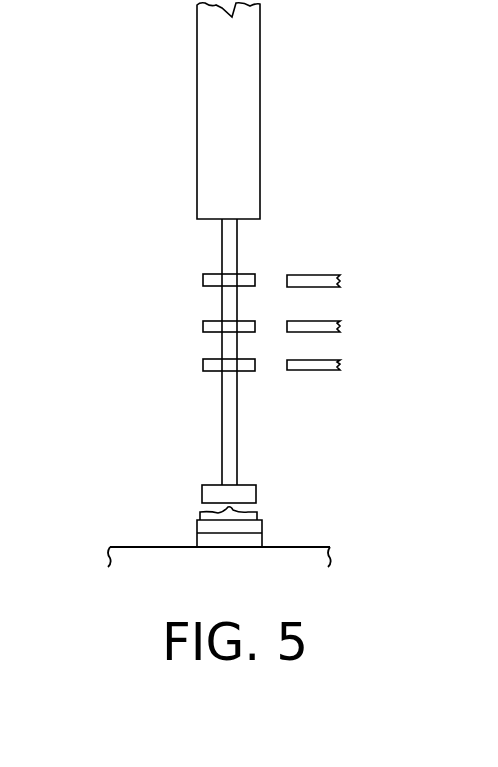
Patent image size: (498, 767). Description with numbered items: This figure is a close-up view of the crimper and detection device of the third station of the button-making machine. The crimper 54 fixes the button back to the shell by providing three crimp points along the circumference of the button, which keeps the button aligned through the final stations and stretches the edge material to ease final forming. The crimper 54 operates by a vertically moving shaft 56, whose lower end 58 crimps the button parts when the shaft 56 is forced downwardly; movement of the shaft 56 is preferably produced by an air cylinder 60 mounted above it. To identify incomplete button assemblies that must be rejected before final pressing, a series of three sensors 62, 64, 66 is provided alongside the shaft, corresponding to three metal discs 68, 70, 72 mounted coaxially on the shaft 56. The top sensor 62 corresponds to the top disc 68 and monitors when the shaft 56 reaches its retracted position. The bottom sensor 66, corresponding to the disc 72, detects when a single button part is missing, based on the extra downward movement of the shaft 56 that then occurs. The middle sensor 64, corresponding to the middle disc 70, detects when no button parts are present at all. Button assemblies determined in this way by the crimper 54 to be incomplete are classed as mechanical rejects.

The crimping mechanism 54 is at (172, 215).
The shaft 56 is at (229, 250).
The lower end 58 is at (243, 494).
The air cylinder 60 is at (244, 101).
The top sensor 62 is at (306, 280).
The middle sensor 64 is at (308, 327).
The bottom sensor 66 is at (305, 367).
The top disc 68 is at (216, 280).
The middle disc 70 is at (216, 327).
The disc 72 is at (214, 365).